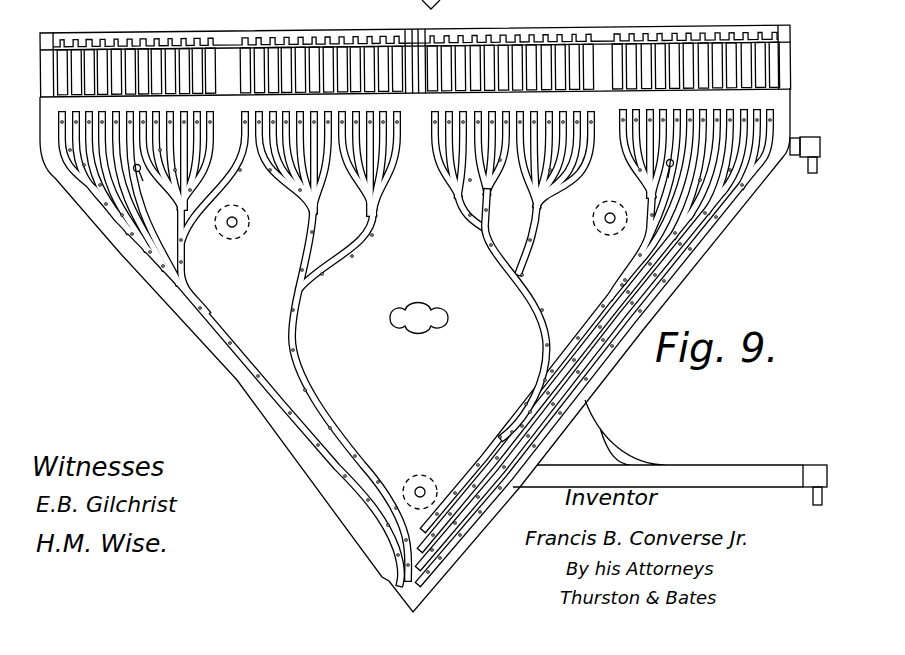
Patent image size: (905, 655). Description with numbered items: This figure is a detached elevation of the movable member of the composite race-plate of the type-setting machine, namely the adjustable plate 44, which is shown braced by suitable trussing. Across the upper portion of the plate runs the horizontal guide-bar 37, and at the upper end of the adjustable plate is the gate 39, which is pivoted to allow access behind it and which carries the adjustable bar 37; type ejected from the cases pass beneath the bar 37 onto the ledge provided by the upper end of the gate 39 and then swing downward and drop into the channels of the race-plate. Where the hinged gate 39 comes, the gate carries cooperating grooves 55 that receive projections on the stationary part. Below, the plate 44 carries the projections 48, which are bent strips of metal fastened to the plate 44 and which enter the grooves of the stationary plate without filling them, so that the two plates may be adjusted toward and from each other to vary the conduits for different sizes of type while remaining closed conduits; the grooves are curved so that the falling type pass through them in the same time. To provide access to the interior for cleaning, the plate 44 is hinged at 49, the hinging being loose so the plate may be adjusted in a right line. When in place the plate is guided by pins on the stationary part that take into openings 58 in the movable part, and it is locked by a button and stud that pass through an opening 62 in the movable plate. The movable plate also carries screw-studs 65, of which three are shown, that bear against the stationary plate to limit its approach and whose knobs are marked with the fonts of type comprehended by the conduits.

The horizontal guide-bar 37 is at (415, 50).
The gate 39 is at (698, 60).
The grooves 55 is at (765, 56).
The adjustable plate 44 is at (415, 350).
The projections 48 is at (541, 288).
The openings 58 is at (405, 185).
The opening 62 is at (428, 306).
The screw-studs 65 is at (237, 222).
The hinge 49 is at (809, 173).